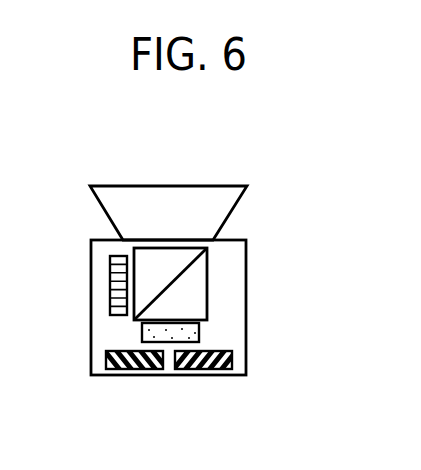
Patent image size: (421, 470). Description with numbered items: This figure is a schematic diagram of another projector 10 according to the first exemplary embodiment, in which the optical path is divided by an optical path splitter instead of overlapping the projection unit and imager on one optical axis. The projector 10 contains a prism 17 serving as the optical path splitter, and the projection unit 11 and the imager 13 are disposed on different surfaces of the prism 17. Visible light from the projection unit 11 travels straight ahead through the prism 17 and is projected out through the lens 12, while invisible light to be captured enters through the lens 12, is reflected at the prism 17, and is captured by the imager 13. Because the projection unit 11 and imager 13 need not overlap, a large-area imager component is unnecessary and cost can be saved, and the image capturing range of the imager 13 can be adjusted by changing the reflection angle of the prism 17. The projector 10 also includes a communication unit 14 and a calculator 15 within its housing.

The projector 10 is at (265, 368).
The projection unit 11 is at (199, 332).
The lens 12 is at (228, 218).
The imager 13 is at (110, 286).
The communication unit 14 is at (203, 376).
The calculator 15 is at (133, 376).
The prism 17 is at (208, 285).